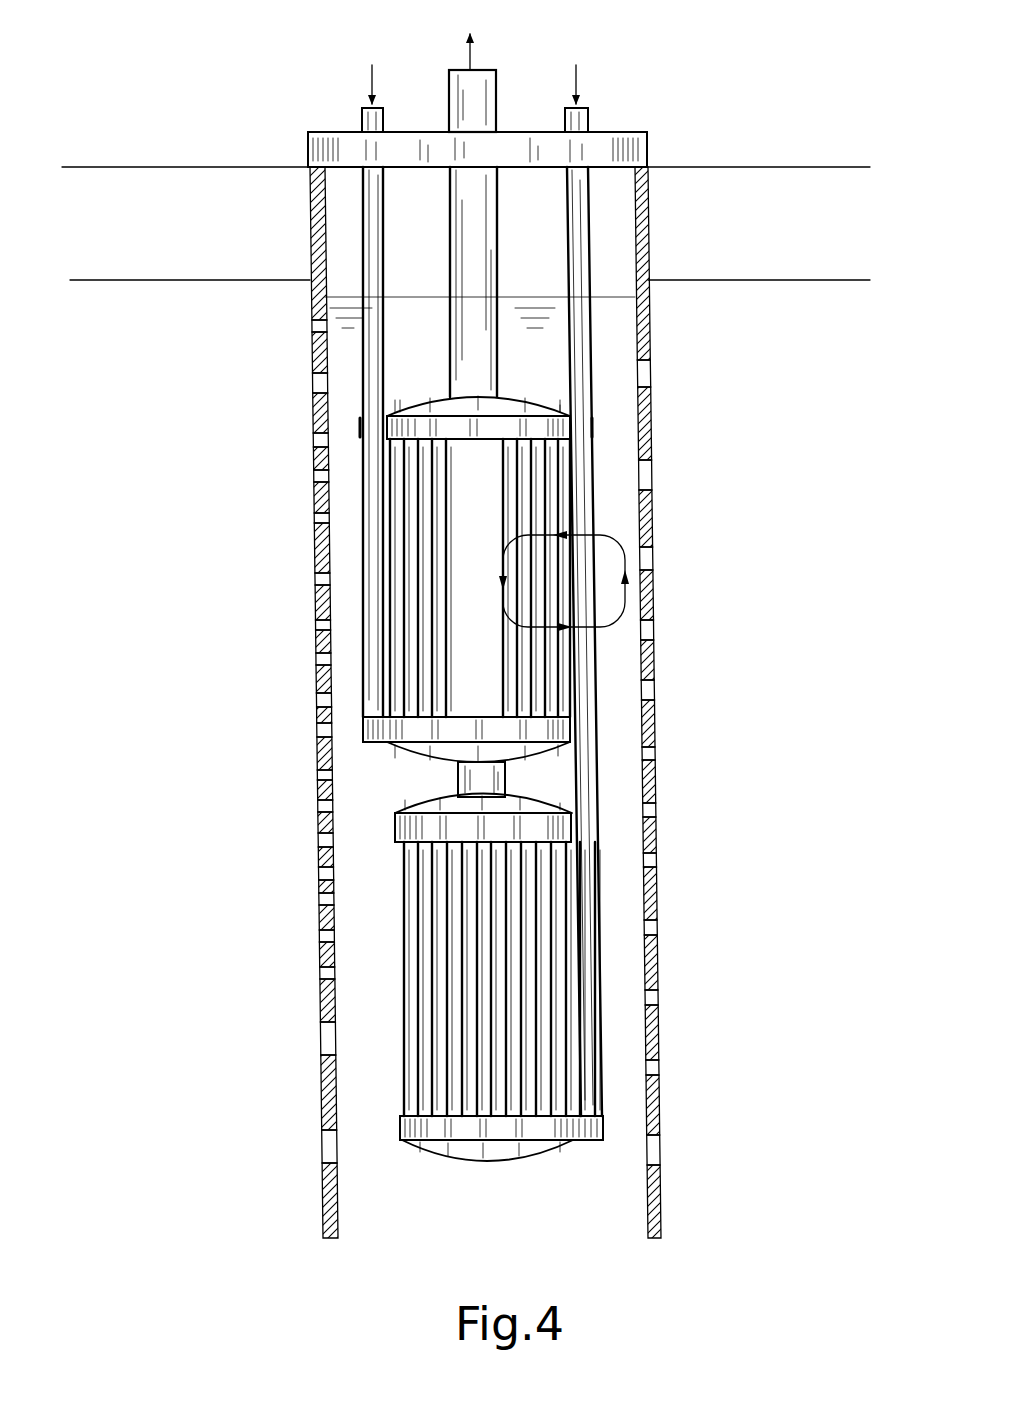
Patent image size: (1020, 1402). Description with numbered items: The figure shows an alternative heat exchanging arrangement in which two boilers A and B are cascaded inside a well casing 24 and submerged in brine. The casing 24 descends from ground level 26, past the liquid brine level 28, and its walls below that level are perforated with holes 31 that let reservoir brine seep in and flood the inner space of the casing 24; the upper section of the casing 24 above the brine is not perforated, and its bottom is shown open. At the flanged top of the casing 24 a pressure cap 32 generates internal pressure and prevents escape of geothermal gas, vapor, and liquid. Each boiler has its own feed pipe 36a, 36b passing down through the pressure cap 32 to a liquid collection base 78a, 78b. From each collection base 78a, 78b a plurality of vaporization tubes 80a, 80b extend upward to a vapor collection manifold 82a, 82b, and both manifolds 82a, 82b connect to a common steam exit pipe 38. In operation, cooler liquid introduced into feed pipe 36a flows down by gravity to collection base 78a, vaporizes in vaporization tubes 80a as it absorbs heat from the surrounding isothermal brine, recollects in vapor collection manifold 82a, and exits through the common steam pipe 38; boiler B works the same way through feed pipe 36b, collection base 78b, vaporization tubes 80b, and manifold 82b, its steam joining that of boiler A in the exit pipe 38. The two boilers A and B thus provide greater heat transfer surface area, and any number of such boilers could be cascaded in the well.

The well casing 24 is at (650, 198).
The ground level 26 is at (245, 165).
The liquid brine level 28 is at (780, 280).
The holes 31 is at (316, 1146).
The pressure cap 32 is at (650, 133).
The feed pipe 36a is at (582, 234).
The feed pipe 36b is at (363, 231).
The common steam exit pipe 38 is at (460, 66).
The liquid collection base 78a is at (605, 1128).
The liquid collection base 78b is at (415, 762).
The vaporization tubes 80a is at (400, 980).
The vaporization tubes 80b is at (560, 530).
The vapor collection manifold 82a is at (540, 800).
The vapor collection manifold 82b is at (415, 400).
The boiler A is at (488, 955).
The boiler B is at (445, 566).